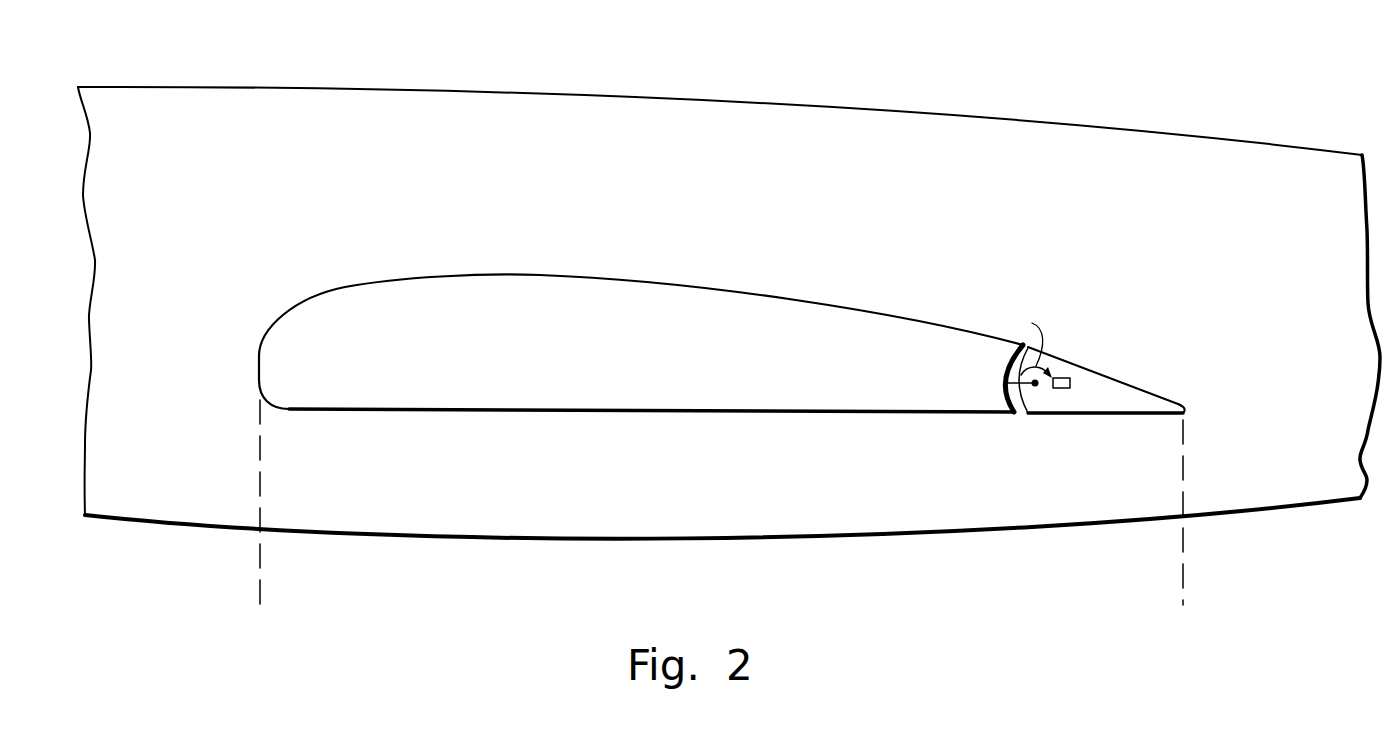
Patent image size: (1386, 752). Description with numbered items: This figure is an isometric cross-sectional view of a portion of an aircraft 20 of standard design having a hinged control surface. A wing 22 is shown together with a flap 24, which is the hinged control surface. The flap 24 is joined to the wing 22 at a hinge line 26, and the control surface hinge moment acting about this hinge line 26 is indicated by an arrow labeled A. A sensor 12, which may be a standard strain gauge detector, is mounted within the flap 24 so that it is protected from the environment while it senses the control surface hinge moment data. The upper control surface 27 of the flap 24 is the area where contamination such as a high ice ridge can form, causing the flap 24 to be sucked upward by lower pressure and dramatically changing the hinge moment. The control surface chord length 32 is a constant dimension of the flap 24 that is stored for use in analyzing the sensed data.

The aircraft 20 is at (783, 70).
The wing 22 is at (555, 292).
The flap 24 is at (1136, 401).
The control surface 27 is at (1100, 367).
The hinge line 26 is at (1036, 388).
The sensor 12 is at (1063, 389).
The control surface chord length 32 is at (1181, 592).